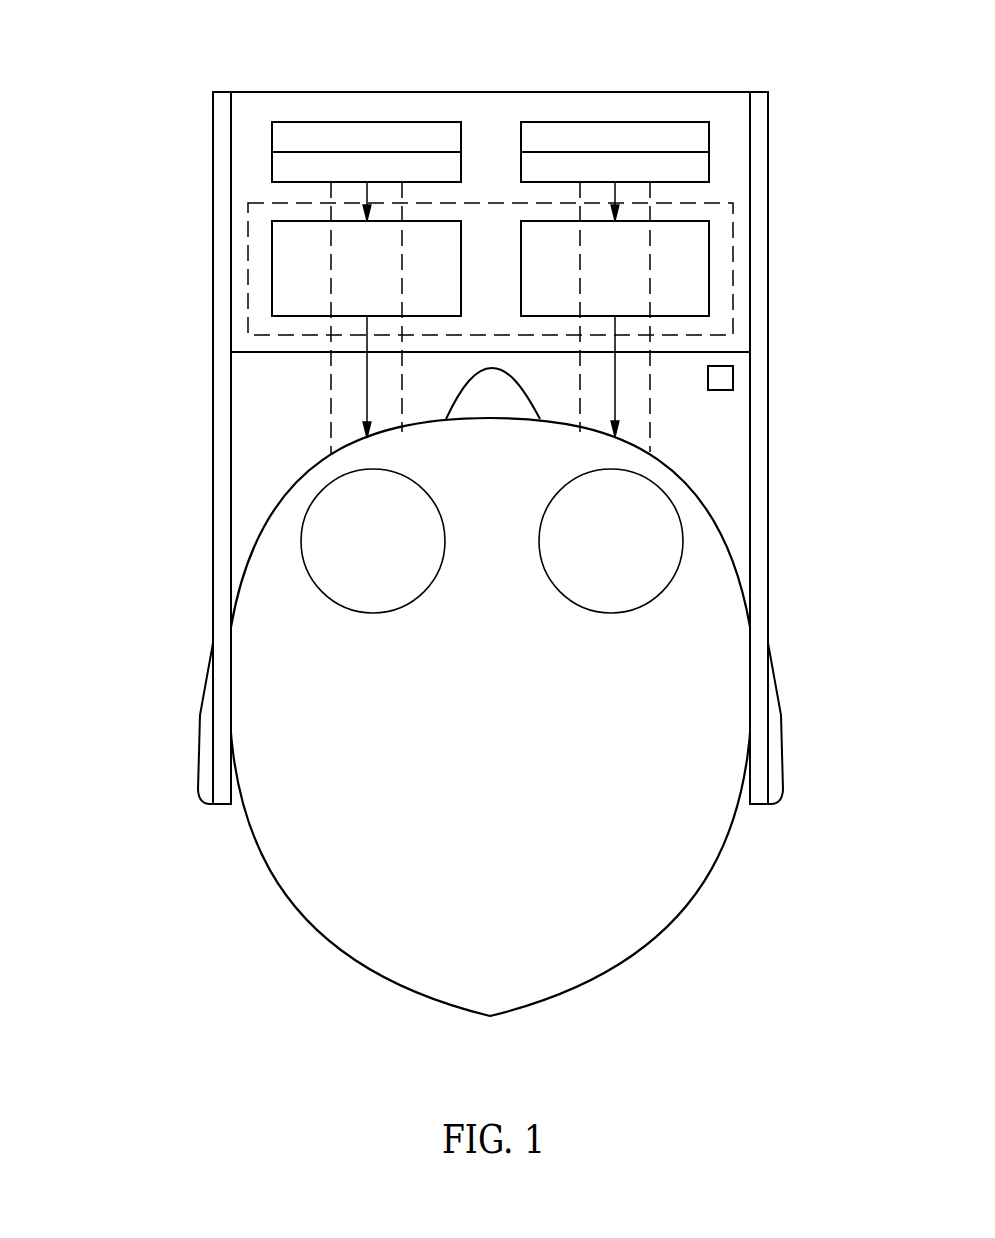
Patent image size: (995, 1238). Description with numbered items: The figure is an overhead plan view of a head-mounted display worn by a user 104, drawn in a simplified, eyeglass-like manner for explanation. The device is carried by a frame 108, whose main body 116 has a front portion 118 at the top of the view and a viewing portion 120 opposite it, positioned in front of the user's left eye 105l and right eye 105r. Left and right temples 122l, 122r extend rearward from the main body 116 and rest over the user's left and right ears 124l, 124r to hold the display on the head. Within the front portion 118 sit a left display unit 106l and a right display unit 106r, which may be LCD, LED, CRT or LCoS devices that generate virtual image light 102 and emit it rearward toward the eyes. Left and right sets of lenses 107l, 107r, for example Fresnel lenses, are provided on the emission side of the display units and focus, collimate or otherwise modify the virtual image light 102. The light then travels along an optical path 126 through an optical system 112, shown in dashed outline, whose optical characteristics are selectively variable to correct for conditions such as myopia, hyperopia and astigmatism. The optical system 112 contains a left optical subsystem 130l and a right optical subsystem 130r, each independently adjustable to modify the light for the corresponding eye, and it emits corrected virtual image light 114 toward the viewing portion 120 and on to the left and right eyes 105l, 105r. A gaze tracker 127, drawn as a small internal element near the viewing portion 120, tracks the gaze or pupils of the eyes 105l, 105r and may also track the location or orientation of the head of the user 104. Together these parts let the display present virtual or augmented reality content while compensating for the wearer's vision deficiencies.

The virtual image light 102 is at (615, 187).
The user 104 is at (268, 905).
The left eye 105l is at (311, 577).
The right eye 105r is at (673, 577).
The left display unit 106l is at (272, 137).
The right display unit 106r is at (709, 137).
The left set of lenses 107l is at (272, 175).
The right set of lenses 107r is at (709, 172).
The frame 108 is at (195, 249).
The optical system 112 is at (248, 232).
The corrected virtual image light 114 is at (617, 402).
The main body 116 is at (785, 249).
The front portion 118 is at (330, 77).
The viewing portion 120 is at (263, 353).
The left temple 122l is at (213, 450).
The right temple 122r is at (768, 450).
The left ear 124l is at (203, 776).
The right ear 124r is at (779, 776).
The optical path 126 is at (400, 207).
The gaze tracker 127 is at (735, 378).
The left optical subsystem 130l is at (272, 277).
The right optical subsystem 130r is at (709, 277).